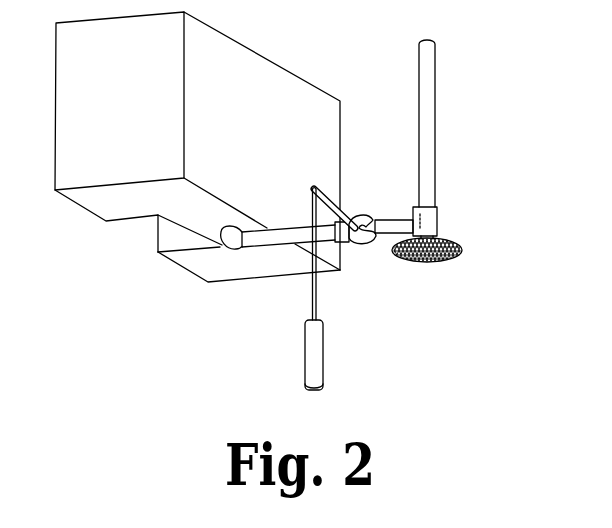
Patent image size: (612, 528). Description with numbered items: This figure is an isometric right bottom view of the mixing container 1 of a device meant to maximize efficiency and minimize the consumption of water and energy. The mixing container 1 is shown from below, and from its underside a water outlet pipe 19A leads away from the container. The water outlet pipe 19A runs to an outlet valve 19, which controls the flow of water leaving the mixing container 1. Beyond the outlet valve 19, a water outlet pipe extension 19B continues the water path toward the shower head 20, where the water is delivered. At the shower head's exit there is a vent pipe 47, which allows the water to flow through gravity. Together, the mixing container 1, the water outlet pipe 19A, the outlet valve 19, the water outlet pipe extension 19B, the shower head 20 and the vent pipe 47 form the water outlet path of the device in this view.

The mixing container 1 is at (122, 190).
The outlet valve 19 is at (368, 223).
The water outlet pipe 19A is at (272, 240).
The water outlet pipe extension 19B is at (390, 232).
The shower head 20 is at (435, 257).
The vent pipe 47 is at (435, 106).